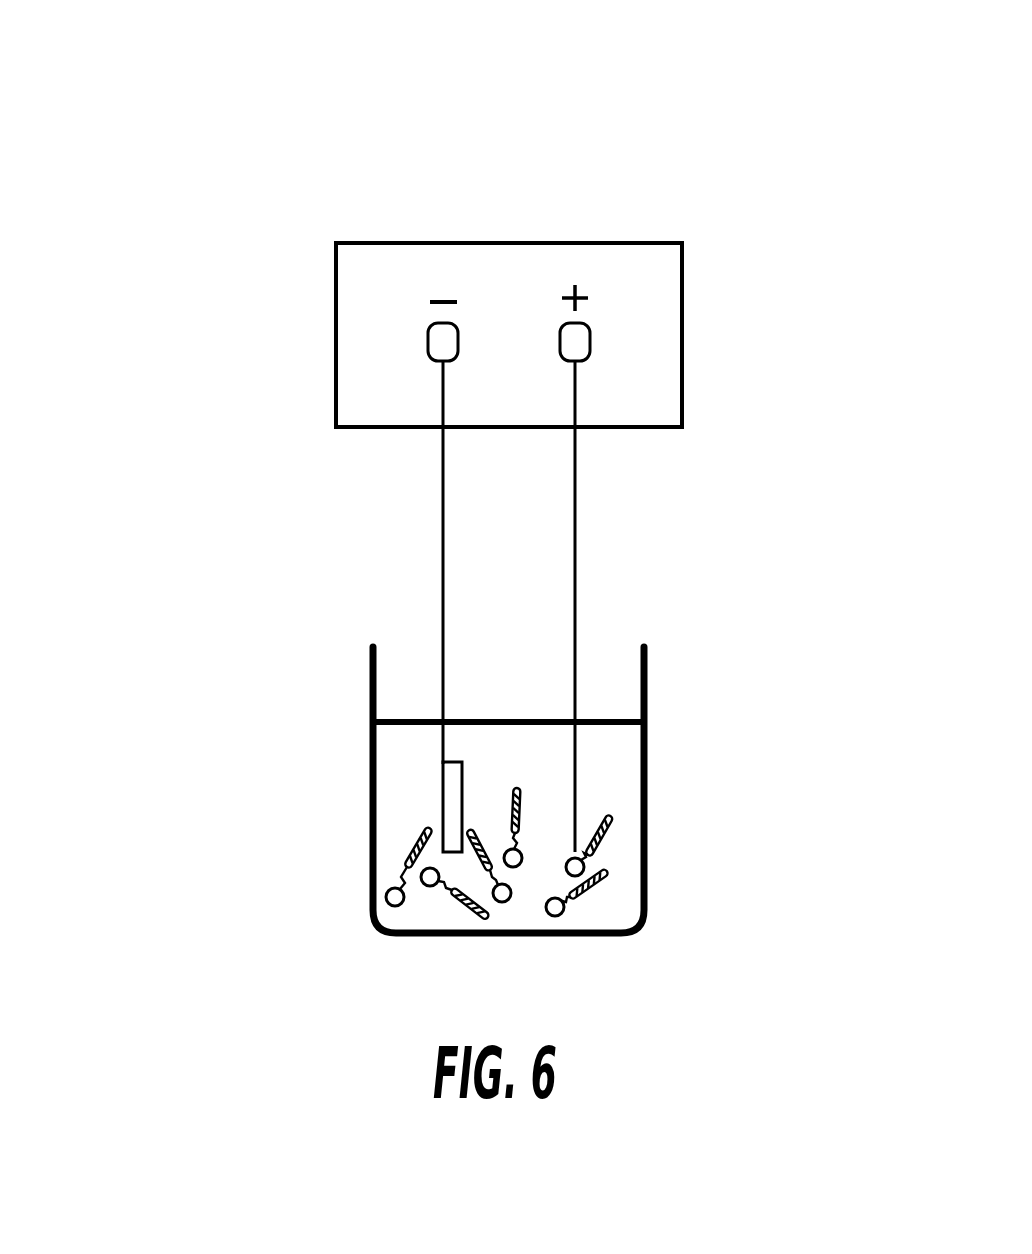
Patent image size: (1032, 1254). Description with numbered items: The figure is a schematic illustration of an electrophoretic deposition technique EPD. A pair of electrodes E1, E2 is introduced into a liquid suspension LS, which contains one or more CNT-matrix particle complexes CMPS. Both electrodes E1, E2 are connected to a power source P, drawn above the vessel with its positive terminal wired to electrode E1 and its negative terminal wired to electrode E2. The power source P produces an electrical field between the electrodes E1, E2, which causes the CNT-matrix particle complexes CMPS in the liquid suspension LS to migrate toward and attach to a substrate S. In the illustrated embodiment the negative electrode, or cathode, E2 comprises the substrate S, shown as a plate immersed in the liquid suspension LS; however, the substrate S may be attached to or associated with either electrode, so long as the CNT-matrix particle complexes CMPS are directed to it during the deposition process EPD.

The electrophoretic deposition technique EPD is at (265, 125).
The power source P is at (692, 215).
The first electrode E1 is at (612, 584).
The negative electrode (cathode) E2 is at (405, 602).
The substrate S is at (415, 812).
The liquid suspension LS is at (608, 782).
The CNT-matrix particle complex CMPS is at (530, 862).